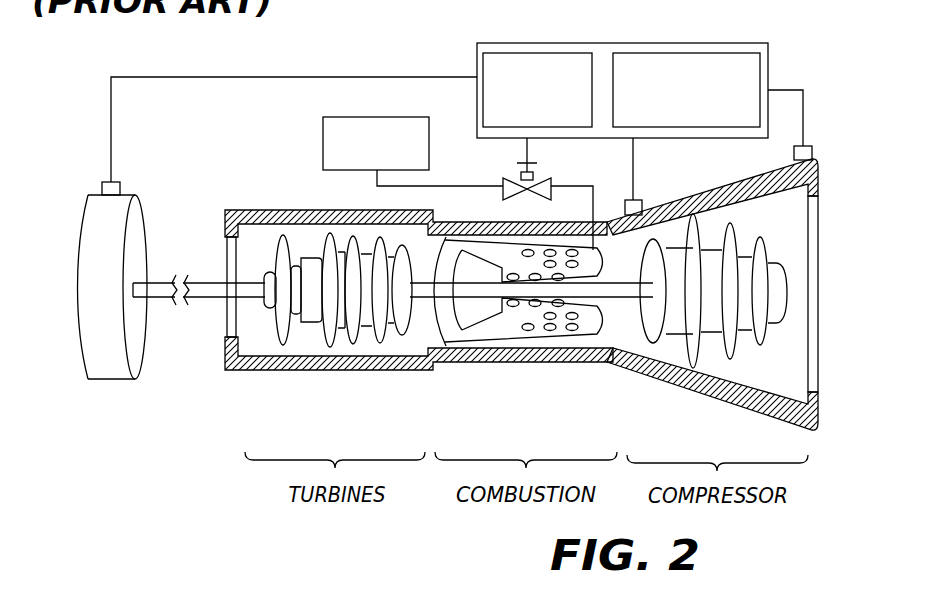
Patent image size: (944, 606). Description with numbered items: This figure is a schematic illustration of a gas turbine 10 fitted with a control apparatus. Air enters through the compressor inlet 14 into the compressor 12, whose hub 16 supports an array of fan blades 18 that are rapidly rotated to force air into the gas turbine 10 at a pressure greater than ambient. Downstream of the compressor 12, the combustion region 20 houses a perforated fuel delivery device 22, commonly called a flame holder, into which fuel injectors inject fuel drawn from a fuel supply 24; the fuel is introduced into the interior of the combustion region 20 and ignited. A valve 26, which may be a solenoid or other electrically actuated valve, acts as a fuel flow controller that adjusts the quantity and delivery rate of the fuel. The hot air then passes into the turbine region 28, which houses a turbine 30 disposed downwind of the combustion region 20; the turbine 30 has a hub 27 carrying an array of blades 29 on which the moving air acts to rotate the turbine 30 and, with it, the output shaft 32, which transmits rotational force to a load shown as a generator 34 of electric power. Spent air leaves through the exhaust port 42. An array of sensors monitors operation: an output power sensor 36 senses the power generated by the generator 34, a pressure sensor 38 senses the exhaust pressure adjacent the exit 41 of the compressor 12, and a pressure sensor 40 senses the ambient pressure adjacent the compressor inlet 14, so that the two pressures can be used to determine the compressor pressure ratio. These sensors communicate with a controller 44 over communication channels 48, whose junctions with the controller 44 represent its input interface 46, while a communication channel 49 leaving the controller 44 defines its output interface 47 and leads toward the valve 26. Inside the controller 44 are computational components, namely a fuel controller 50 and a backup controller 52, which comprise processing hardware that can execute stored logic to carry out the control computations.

The gas turbine 10 is at (451, 307).
The compressor 12 is at (737, 297).
The compressor inlet 14 is at (820, 257).
The hub 16 is at (674, 257).
The fan blades 18 is at (731, 230).
The combustion region 20 is at (527, 334).
The fuel delivery device 22 is at (510, 328).
The fuel supply 24 is at (337, 128).
The valve 26 is at (552, 186).
The hub 27 is at (317, 273).
The turbine region 28 is at (394, 302).
The blades 29 is at (335, 240).
The turbine 30 is at (338, 301).
The output shaft 32 is at (205, 296).
The generator 34 is at (110, 213).
The output power sensor 36 is at (121, 190).
The pressure sensor 38 is at (625, 205).
The pressure sensor 40 is at (812, 156).
The exit 41 is at (615, 366).
The exhaust port 42 is at (228, 257).
The controller 44 is at (659, 69).
The input interface 46 is at (477, 78).
The output interface 47 is at (525, 142).
The communication channels 48 is at (411, 77).
The communication channel 49 is at (521, 156).
The fuel controller 50 is at (572, 62).
The backup controller 52 is at (632, 64).